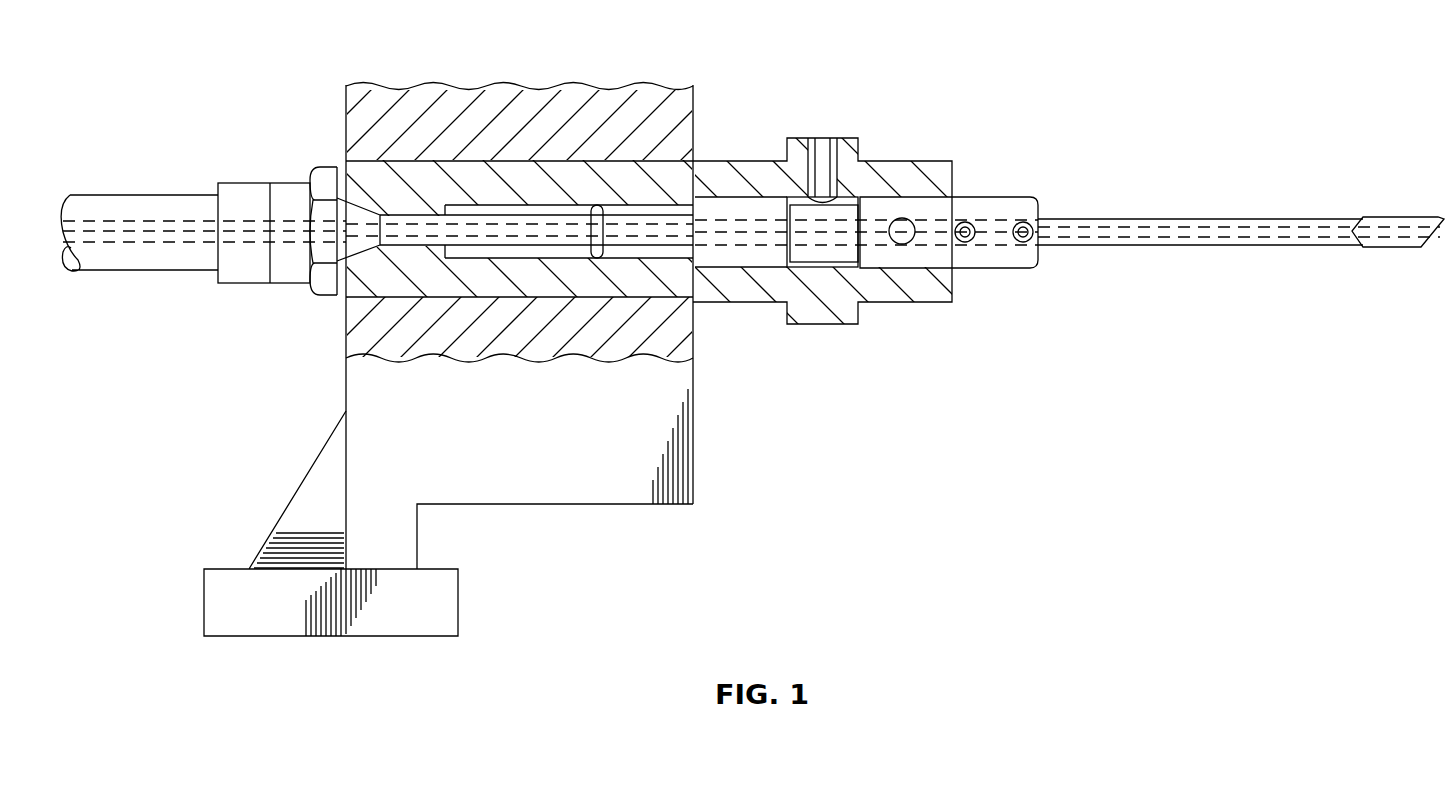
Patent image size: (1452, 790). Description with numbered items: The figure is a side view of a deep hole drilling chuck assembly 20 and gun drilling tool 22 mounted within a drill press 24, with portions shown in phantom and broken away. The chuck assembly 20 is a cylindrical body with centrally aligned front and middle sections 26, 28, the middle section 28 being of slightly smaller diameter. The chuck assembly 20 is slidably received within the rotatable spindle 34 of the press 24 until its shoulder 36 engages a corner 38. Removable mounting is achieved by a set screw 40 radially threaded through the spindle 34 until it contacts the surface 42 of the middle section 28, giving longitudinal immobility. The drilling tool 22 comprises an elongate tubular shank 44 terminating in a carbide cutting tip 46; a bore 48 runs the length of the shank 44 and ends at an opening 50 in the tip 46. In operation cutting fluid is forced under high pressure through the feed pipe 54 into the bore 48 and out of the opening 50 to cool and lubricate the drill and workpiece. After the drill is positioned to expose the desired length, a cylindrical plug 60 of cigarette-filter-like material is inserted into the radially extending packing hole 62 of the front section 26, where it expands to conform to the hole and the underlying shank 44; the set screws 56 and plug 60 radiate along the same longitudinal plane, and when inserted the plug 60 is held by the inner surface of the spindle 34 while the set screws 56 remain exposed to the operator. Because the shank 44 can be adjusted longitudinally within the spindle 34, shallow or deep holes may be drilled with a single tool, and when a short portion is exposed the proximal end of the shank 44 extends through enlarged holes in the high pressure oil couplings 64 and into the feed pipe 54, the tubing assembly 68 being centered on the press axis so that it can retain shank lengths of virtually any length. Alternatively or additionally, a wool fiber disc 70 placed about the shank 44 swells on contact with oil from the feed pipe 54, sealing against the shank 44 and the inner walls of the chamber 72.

The deep hole drilling chuck assembly 20 is at (997, 178).
The gun drilling tool 22 is at (1125, 192).
The drill press 24 is at (717, 428).
The front section 26 is at (877, 271).
The middle section 28 is at (817, 253).
The rotatable spindle 34 is at (684, 324).
The shoulder 36 is at (710, 207).
The corner 38 is at (688, 268).
The set screw 40 is at (823, 138).
The surface 42 is at (848, 202).
The shank 44 is at (1188, 219).
The cutting tip 46 is at (1444, 215).
The bore 48 is at (1228, 232).
The opening 50 is at (1434, 241).
The feed pipe 54 is at (162, 257).
The set screws 56 is at (1018, 256).
The cylindrical plug 60 is at (904, 208).
The packing hole 62 is at (895, 250).
The high pressure oil couplings 64 is at (360, 243).
The tubing assembly 68 is at (229, 176).
The wool fiber disc 70 is at (597, 258).
The chamber 72 is at (500, 213).